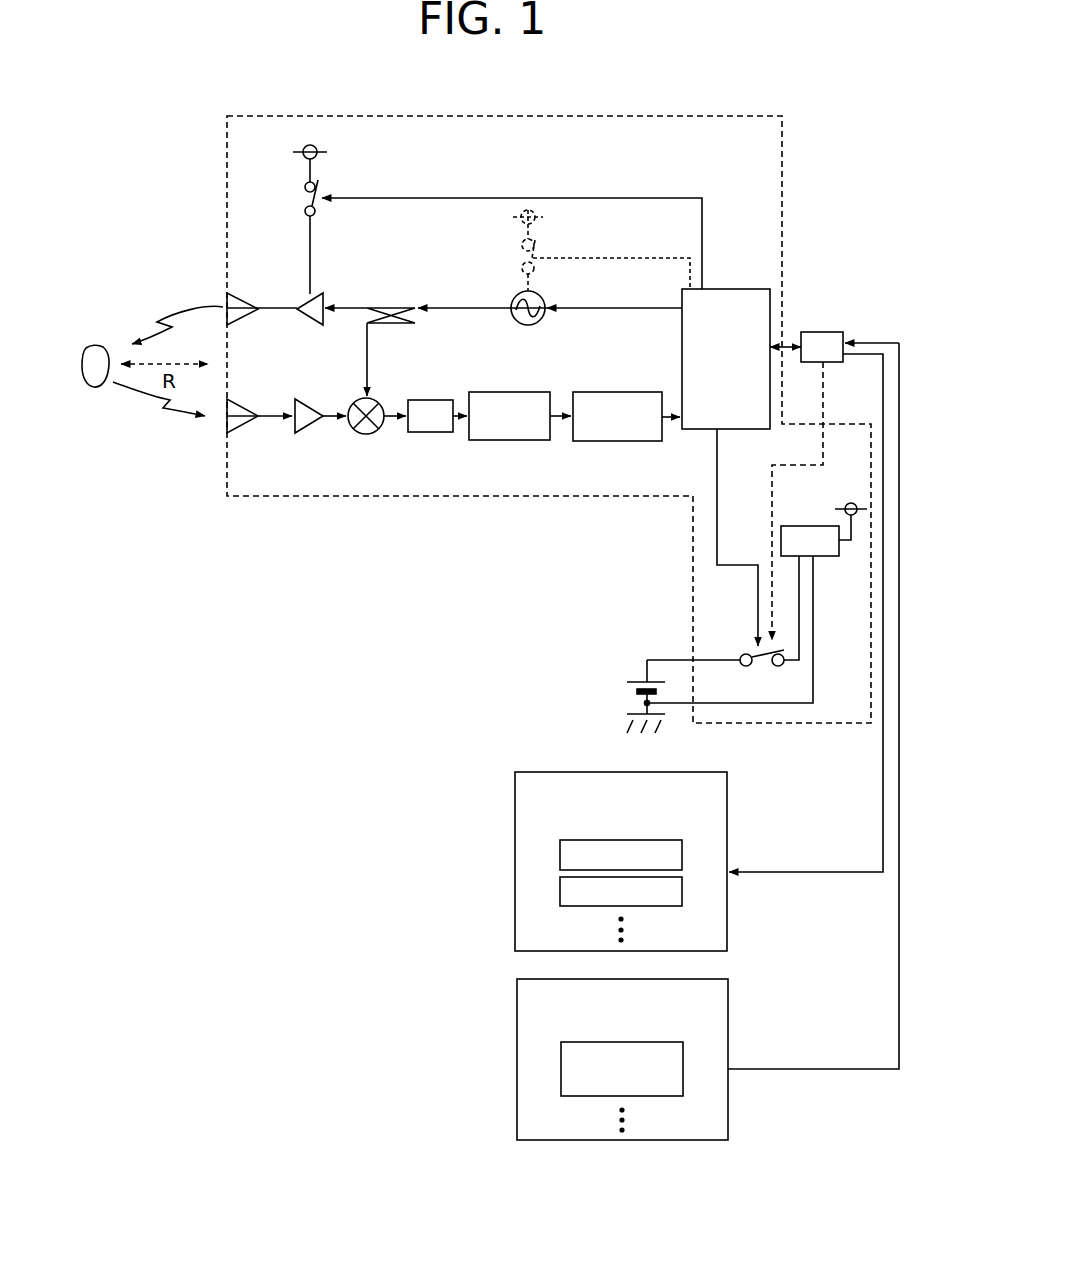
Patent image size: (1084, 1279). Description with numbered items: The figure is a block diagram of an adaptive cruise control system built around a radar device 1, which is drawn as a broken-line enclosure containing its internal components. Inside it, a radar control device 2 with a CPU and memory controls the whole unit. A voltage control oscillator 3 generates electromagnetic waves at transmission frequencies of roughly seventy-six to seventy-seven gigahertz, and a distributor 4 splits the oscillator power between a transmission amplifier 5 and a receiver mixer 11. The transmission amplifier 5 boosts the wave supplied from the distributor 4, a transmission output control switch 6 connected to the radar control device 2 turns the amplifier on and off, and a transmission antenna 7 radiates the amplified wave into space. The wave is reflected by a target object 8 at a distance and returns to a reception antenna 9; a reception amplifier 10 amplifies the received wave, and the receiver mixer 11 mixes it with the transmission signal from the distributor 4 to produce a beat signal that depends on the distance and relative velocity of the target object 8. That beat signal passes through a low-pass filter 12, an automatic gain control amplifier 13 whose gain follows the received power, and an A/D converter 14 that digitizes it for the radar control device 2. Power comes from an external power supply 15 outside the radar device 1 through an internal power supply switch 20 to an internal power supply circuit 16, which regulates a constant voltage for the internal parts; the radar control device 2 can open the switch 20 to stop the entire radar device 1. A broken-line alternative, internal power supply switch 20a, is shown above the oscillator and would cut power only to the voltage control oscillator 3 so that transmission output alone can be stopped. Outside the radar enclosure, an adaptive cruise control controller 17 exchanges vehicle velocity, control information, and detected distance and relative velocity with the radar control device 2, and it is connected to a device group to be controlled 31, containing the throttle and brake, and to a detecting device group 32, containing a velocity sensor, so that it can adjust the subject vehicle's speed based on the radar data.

The radar device 1 is at (517, 116).
The radar control device 2 is at (732, 289).
The voltage control oscillator 3 is at (546, 300).
The distributor 4 is at (393, 308).
The transmission amplifier 5 is at (325, 296).
The transmission output control switch 6 is at (303, 196).
The transmission antenna 7 is at (237, 293).
The target object 8 is at (97, 345).
The reception antenna 9 is at (240, 399).
The reception amplifier 10 is at (296, 430).
The receiver mixer 11 is at (352, 431).
The low-pass filter 12 is at (430, 432).
The automatic gain control amplifier 13 is at (520, 440).
The A/D converter 14 is at (620, 441).
The external power supply 15 is at (628, 681).
The internal power supply circuit 16 is at (805, 526).
The adaptive cruise control controller 17 is at (823, 332).
The internal power supply switch 20 is at (745, 652).
The internal power supply switch 20a is at (541, 247).
The device group to be controlled 31 is at (728, 792).
The detecting device group 32 is at (728, 998).